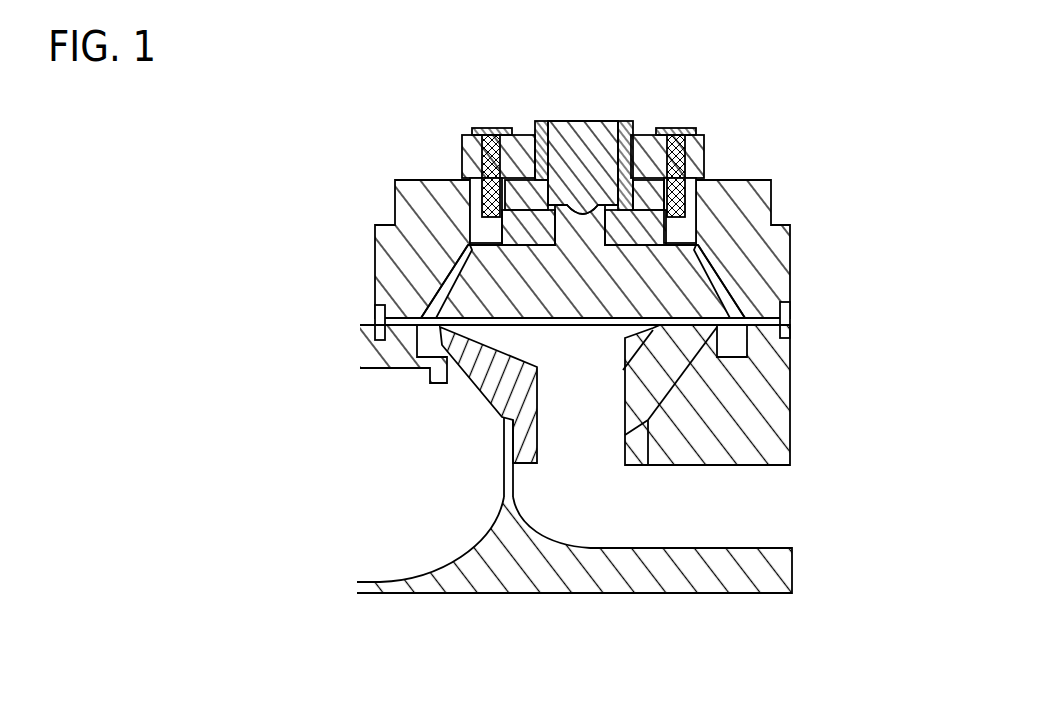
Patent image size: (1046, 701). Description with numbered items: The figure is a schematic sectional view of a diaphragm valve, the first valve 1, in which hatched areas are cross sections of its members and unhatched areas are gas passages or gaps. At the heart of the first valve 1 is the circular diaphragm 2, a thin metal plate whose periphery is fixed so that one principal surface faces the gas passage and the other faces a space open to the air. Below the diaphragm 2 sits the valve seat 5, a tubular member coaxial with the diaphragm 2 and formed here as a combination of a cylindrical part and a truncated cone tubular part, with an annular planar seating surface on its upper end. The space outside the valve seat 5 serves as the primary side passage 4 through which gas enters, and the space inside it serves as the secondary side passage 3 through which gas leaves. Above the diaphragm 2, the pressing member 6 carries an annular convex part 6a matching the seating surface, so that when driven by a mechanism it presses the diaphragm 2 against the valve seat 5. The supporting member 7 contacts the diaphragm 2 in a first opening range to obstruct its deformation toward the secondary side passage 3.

The first valve 1 is at (812, 188).
The diaphragm 2 is at (617, 307).
The secondary side passage 3 is at (660, 504).
The primary side passage 4 is at (392, 467).
The valve seat 5 is at (662, 380).
The pressing member 6 is at (397, 222).
The convex part 6a is at (440, 298).
The supporting member 7 is at (482, 387).